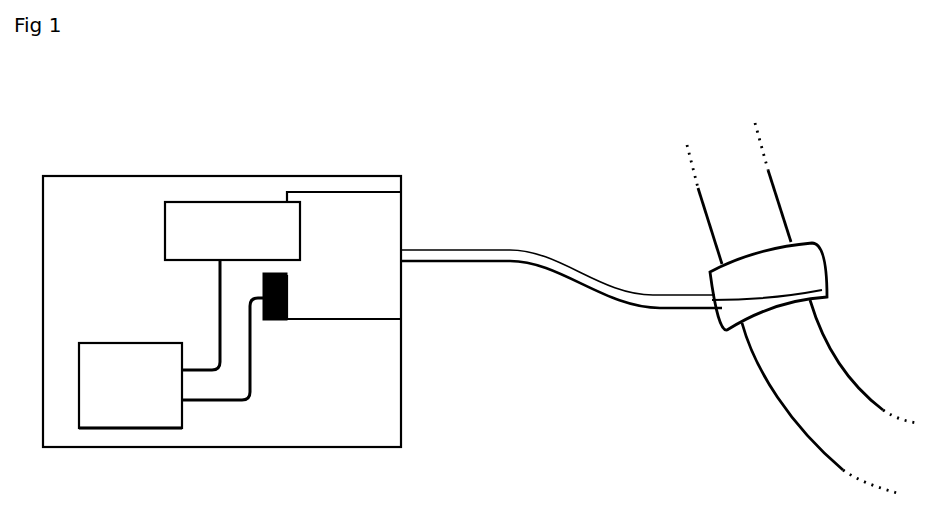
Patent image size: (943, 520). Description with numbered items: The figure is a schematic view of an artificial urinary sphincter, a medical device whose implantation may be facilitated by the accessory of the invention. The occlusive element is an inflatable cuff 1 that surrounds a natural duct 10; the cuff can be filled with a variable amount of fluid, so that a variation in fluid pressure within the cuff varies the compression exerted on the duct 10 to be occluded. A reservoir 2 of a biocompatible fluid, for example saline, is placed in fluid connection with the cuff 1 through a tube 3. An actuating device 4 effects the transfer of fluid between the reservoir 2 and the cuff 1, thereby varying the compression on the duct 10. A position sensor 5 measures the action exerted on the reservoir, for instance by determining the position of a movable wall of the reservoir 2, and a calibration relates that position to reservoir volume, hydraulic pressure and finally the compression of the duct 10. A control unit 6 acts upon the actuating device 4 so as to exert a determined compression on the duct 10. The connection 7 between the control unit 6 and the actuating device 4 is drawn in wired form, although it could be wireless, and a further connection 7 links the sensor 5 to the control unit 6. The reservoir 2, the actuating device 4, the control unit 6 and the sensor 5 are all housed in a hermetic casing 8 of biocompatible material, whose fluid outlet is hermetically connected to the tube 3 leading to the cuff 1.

The inflatable cuff 1 is at (820, 272).
The reservoir 2 is at (344, 255).
The tube 3 is at (558, 263).
The actuating device 4 is at (232, 231).
The position sensor 5 is at (273, 322).
The control unit 6 is at (130, 385).
The connection 7 is at (250, 398).
The hermetic casing 8 is at (226, 175).
The natural duct 10 is at (848, 385).